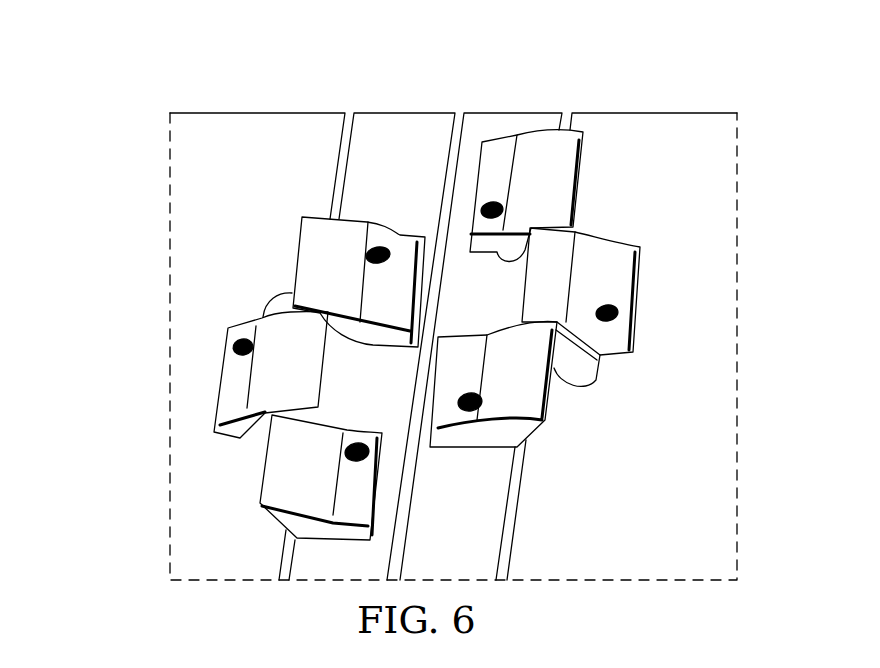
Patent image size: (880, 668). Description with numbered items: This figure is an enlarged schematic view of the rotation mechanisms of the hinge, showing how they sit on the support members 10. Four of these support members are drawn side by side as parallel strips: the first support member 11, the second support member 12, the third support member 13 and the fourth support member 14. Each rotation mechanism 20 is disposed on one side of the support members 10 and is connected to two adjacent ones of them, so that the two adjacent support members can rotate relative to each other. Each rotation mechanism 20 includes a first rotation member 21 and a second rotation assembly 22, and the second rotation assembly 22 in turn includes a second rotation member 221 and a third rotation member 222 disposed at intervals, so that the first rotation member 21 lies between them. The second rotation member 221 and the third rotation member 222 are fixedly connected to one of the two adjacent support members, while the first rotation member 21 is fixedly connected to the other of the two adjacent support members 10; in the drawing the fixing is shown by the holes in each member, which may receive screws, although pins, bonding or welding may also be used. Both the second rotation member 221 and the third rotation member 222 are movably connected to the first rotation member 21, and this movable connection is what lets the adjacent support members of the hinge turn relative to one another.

The support member 10 is at (680, 47).
The first support member 11 is at (237, 128).
The second support member 12 is at (393, 128).
The third support member 13 is at (507, 128).
The fourth support member 14 is at (638, 128).
The rotation mechanism 20 is at (52, 270).
The first rotation member 21 is at (240, 400).
The second rotation assembly 22 is at (100, 230).
The second rotation member 221 is at (312, 277).
The third rotation member 222 is at (327, 460).